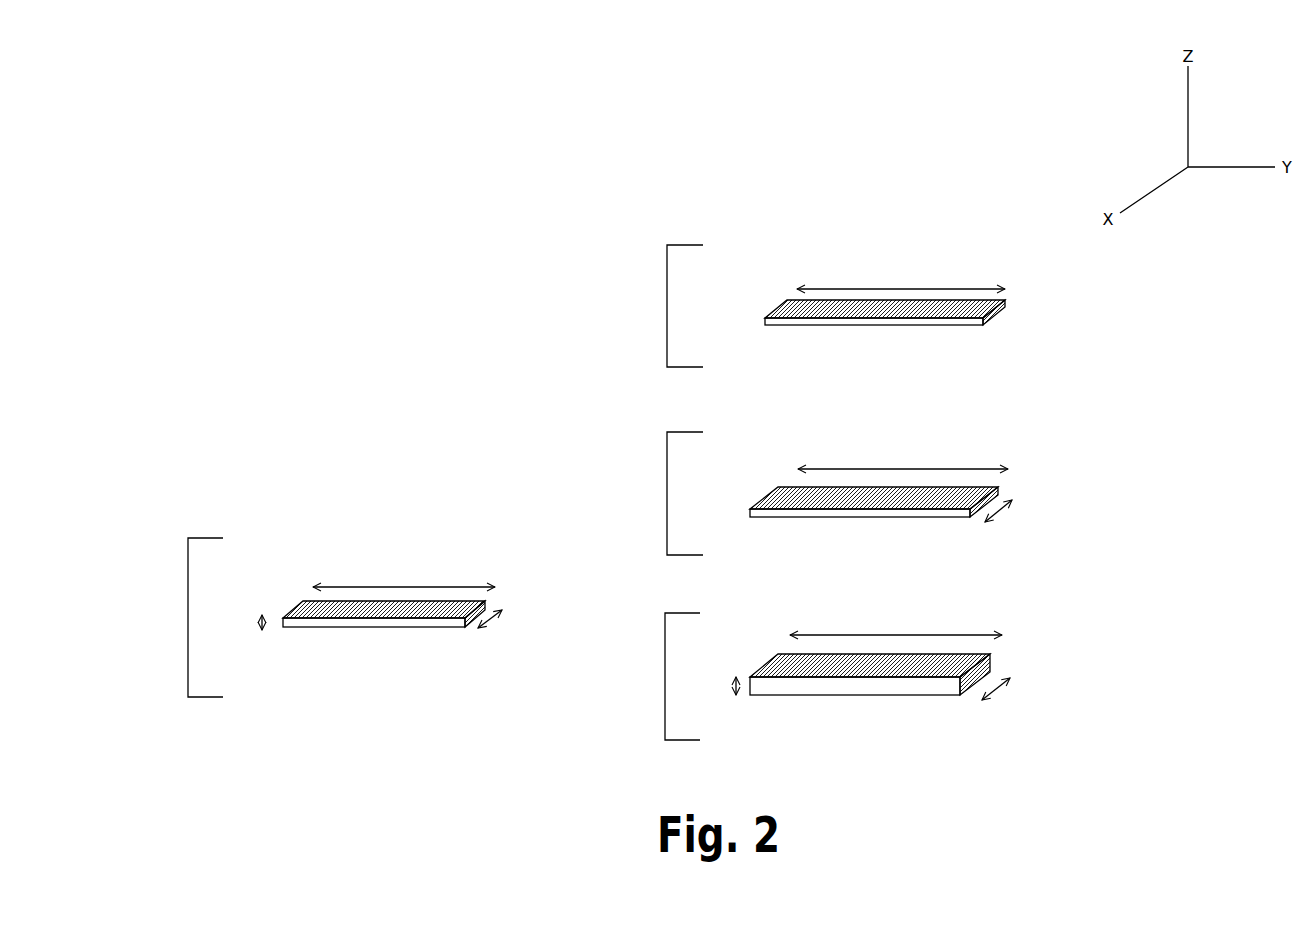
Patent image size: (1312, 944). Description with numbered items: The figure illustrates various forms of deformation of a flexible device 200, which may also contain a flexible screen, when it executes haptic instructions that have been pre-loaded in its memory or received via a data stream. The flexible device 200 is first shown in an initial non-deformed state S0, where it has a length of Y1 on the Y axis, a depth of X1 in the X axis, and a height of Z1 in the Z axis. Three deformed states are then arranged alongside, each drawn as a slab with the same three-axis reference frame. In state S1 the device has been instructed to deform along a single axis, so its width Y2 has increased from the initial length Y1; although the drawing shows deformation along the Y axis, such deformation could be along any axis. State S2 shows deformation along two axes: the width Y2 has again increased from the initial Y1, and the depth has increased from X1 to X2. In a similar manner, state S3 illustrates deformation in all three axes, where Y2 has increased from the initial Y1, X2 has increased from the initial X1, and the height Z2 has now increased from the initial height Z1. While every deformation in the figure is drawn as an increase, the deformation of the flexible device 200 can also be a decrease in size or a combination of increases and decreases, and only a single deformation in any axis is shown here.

The flexible device 200 is at (375, 626).
The initial non-deformed state S0 is at (170, 617).
The single-axis deformation state S1 is at (650, 306).
The two-axis deformation state S2 is at (649, 493).
The three-axis deformation state S3 is at (647, 676).
The initial length on the Y axis Y1 is at (404, 573).
The initial height in the Z axis Z1 is at (241, 625).
The initial depth in the X axis X1 is at (501, 629).
The increased width on the Y axis Y2 is at (899, 447).
The increased depth in the X axis X2 is at (1007, 607).
The increased height in the Z axis Z2 is at (715, 688).